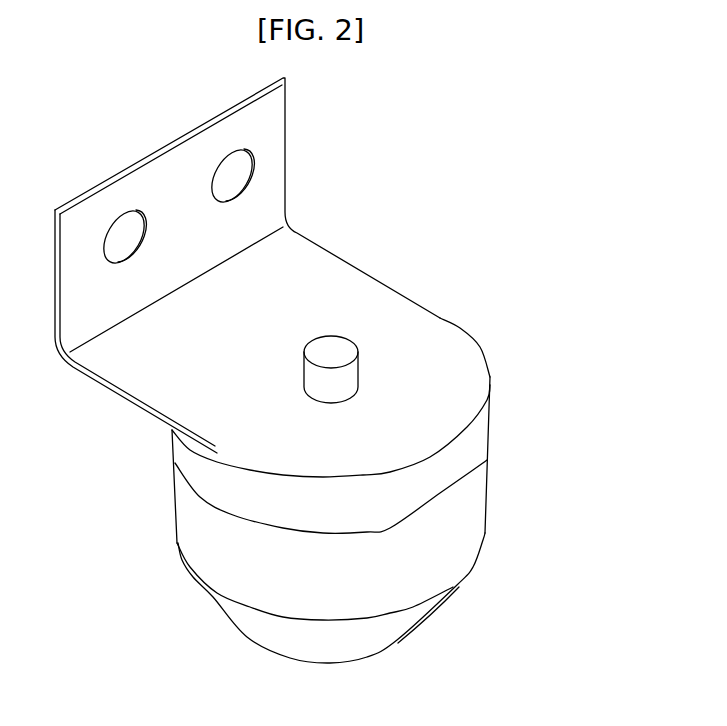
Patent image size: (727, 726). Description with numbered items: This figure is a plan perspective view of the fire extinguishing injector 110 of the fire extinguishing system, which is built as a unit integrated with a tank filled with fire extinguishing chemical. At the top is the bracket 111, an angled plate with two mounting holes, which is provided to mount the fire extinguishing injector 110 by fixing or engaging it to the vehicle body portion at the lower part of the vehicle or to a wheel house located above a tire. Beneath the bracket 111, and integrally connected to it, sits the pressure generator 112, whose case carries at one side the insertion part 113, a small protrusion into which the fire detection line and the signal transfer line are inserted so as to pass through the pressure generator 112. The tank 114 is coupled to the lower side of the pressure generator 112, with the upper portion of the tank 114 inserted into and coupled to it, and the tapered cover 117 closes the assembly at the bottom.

The fire extinguishing injector 110 is at (392, 257).
The bracket 111 is at (260, 138).
The pressure generator 112 is at (473, 448).
The insertion part 113 is at (347, 350).
The tank 114 is at (487, 512).
The cover 117 is at (383, 628).